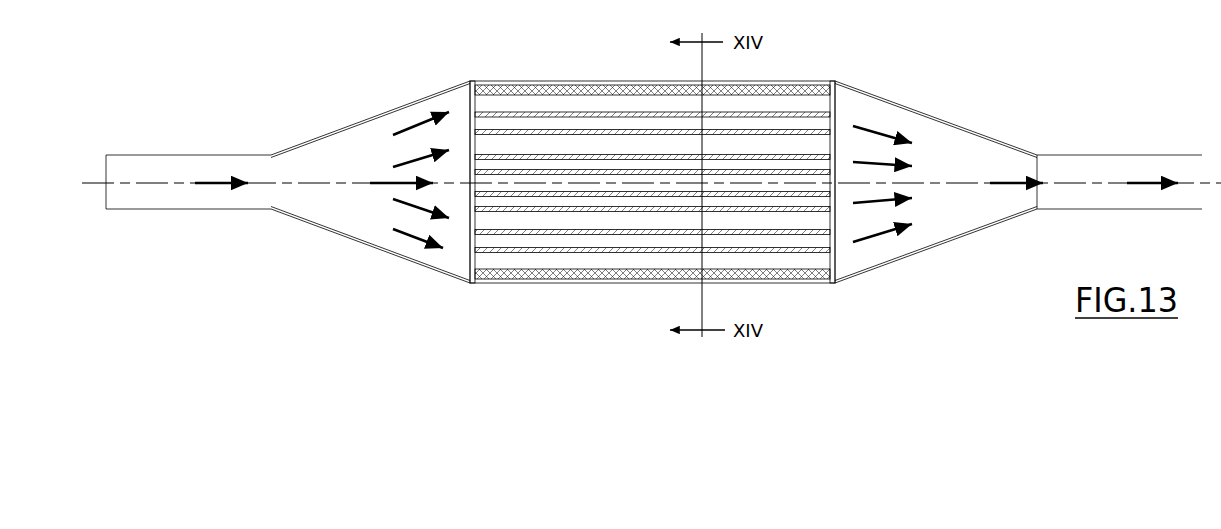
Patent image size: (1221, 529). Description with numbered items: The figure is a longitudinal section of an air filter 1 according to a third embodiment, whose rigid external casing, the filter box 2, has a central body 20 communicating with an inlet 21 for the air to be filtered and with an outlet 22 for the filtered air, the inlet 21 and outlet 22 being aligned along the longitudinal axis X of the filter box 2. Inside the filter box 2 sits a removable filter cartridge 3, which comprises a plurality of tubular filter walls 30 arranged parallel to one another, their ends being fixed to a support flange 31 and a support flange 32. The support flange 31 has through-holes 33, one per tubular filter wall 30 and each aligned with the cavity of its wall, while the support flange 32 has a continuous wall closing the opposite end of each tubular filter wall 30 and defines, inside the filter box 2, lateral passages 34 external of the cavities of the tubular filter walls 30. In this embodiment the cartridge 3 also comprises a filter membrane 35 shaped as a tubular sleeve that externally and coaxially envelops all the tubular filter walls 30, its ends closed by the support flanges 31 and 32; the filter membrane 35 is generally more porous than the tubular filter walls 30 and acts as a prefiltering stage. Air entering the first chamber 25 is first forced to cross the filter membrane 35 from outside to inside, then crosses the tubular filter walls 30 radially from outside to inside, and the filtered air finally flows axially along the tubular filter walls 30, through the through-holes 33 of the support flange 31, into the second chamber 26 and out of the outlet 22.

The air filter 1 is at (183, 122).
The filter box 2 is at (327, 0).
The filter cartridge 3 is at (464, 249).
The central body 20 is at (600, 283).
The inlet 21 is at (162, 212).
The outlet 22 is at (1140, 155).
The first chamber 25 is at (393, 100).
The second chamber 26 is at (948, 169).
The tubular filter walls 30 is at (603, 130).
The support flange 31 is at (833, 120).
The support flange 32 is at (461, 100).
The through-holes 33 is at (830, 145).
The lateral passages 34 is at (420, 8).
The filter membrane 35 is at (655, 83).
The longitudinal axis X is at (300, 182).